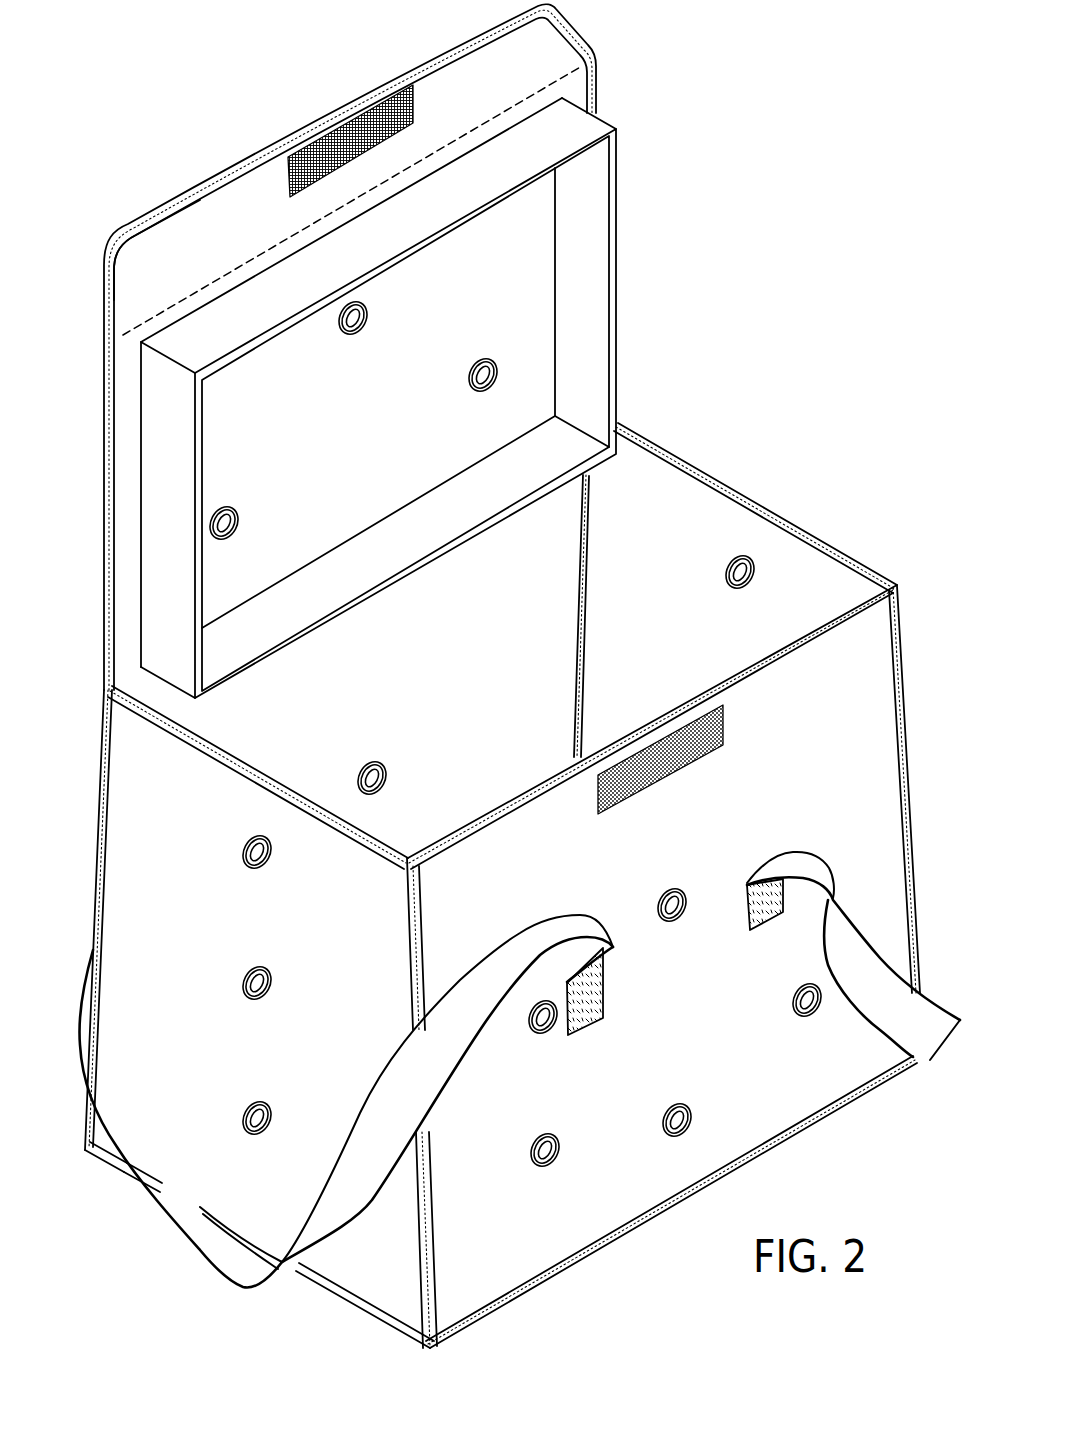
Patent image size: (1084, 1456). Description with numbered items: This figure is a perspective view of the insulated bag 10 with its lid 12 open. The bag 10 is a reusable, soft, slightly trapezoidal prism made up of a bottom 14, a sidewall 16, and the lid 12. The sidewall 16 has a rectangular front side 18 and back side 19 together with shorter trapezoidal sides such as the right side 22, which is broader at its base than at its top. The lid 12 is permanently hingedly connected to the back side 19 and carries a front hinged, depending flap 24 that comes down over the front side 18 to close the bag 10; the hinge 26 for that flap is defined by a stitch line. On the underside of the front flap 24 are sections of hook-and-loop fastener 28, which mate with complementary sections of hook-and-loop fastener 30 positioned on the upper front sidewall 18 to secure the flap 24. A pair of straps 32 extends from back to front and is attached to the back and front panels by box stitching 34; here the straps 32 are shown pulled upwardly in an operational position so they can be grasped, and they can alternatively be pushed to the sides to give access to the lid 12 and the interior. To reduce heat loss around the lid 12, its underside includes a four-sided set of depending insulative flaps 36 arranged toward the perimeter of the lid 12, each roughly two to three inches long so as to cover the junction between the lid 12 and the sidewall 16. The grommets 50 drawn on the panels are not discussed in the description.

The insulated bag 10 is at (832, 184).
The lid 12 is at (130, 467).
The bottom 14 is at (312, 1292).
The sidewall 16 is at (140, 834).
The front side 18 is at (518, 1250).
The back side 19 is at (104, 748).
The right side 22 is at (905, 688).
The front flap 24 is at (148, 257).
The hinge 26 is at (243, 262).
The hook-and-loop fastener 28 is at (350, 137).
The hook-and-loop fastener 30 is at (677, 762).
The straps 32 is at (197, 1233).
The box stitching 34 is at (592, 1022).
The depending insulative flaps 36 is at (444, 205).
The grommet 50 is at (355, 335).